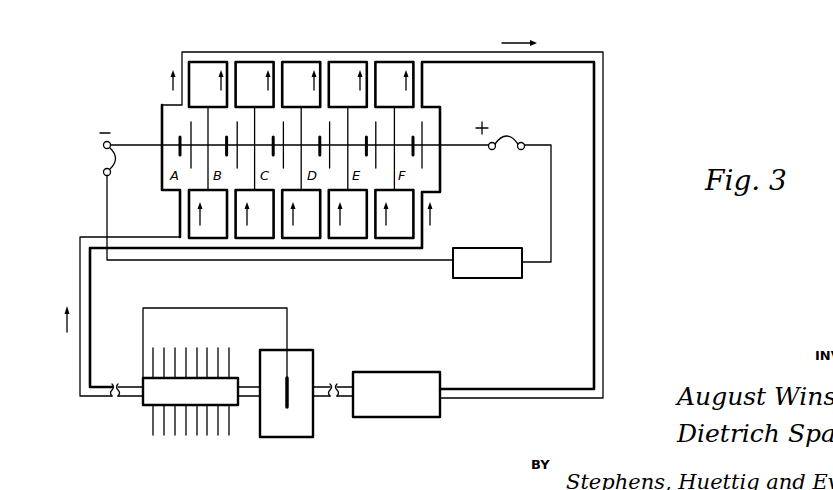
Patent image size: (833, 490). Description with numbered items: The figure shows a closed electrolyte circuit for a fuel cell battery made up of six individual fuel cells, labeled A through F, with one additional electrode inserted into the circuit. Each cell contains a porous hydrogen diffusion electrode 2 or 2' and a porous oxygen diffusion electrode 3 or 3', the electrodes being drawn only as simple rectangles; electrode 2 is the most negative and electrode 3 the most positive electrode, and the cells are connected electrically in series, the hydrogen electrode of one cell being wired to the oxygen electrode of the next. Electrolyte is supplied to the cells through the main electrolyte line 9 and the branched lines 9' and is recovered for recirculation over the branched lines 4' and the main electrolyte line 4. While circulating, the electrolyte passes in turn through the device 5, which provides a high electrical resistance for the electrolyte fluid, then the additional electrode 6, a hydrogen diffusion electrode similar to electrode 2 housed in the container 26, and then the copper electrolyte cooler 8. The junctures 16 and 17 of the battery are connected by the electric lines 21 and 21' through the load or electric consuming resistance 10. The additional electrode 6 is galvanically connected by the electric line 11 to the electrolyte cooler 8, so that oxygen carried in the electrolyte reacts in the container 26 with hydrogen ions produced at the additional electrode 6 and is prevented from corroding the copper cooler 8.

The porous hydrogen diffusion electrode 2 is at (159, 132).
The porous hydrogen diffusion electrode 2' is at (320, 89).
The porous oxygen diffusion electrode 3 is at (442, 134).
The porous oxygen diffusion electrode 3' is at (283, 99).
The main electrolyte line 4 is at (382, 214).
The branched lines 4' is at (307, 84).
The device 5 is at (390, 409).
The additional electrode 6 is at (286, 408).
The electrolyte cooler 8 is at (153, 426).
The main electrolyte line 9 is at (115, 316).
The branched lines 9' is at (296, 214).
The load or electric consuming resistance 10 is at (483, 278).
The electric line 11 is at (287, 320).
The juncture 16 is at (492, 150).
The juncture 17 is at (96, 149).
The electric line 21 is at (552, 203).
The electric line 21' is at (280, 231).
The container 26 is at (300, 437).